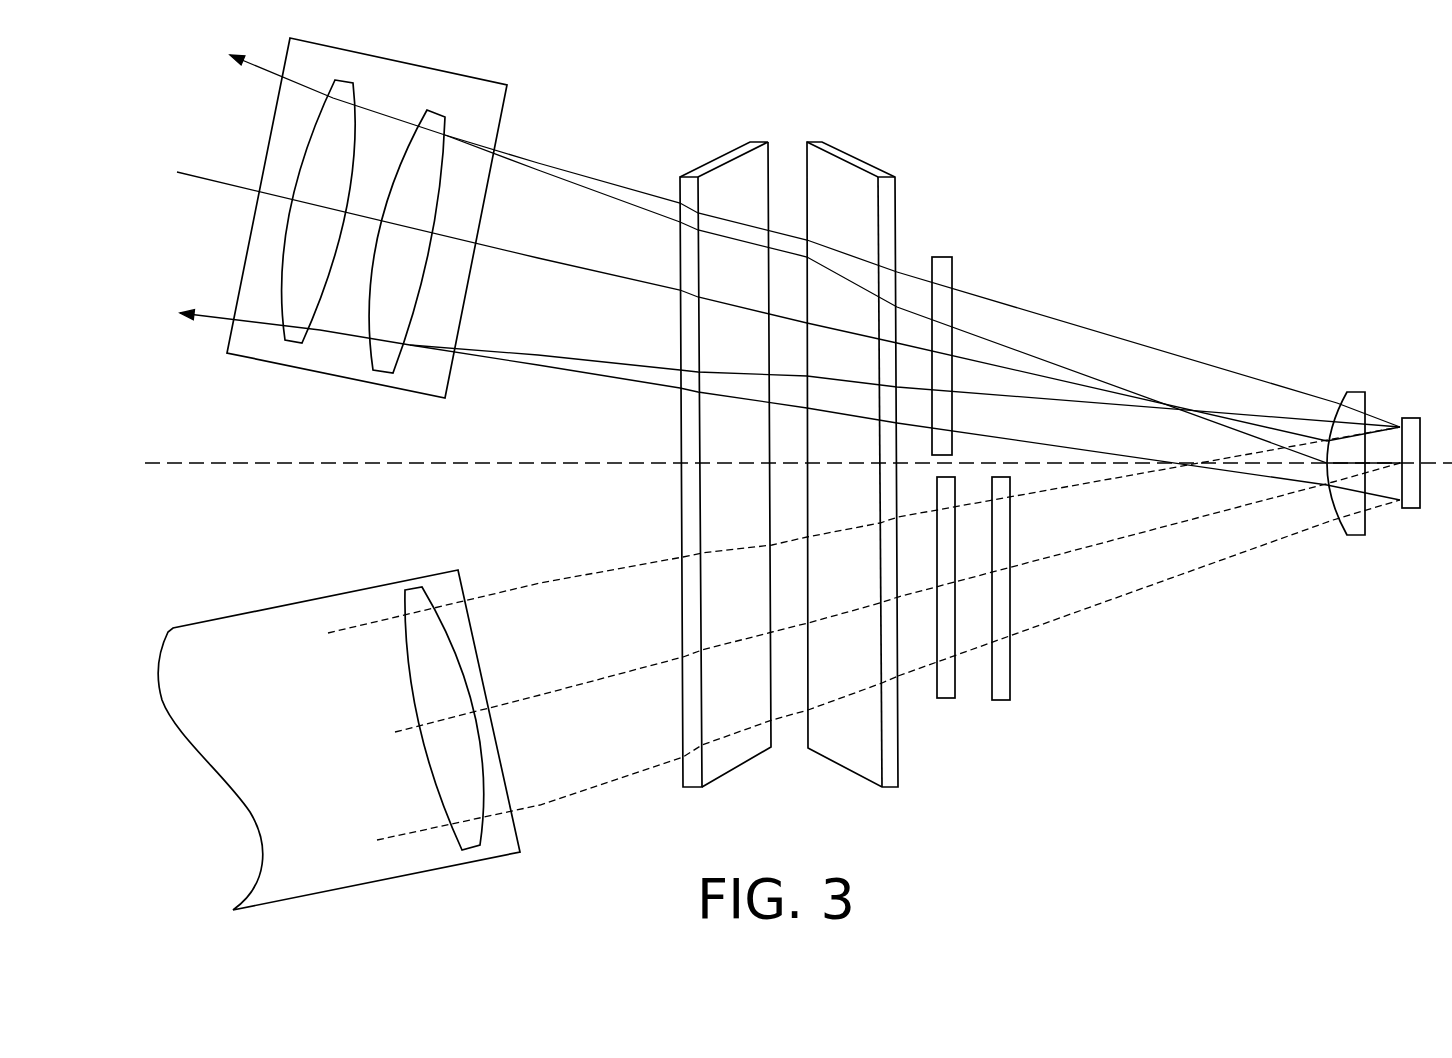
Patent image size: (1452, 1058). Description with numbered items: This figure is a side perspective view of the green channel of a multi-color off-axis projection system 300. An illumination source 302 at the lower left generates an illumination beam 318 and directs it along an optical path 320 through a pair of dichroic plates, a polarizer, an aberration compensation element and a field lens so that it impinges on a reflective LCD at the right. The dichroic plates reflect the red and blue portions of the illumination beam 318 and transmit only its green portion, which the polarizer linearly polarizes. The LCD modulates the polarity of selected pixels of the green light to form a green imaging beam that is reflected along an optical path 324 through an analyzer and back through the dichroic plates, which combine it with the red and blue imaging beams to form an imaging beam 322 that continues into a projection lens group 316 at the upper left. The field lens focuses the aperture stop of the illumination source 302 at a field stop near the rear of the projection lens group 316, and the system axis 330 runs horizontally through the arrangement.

The off-axis projection system 300 is at (1192, 195).
The illumination source 302 is at (522, 840).
The projection lens group 316 is at (303, 373).
The illumination beam 318 is at (592, 575).
The optical path 320 is at (545, 690).
The imaging beam 322 is at (575, 170).
The optical path 324 is at (555, 263).
The system axis 330 is at (277, 464).